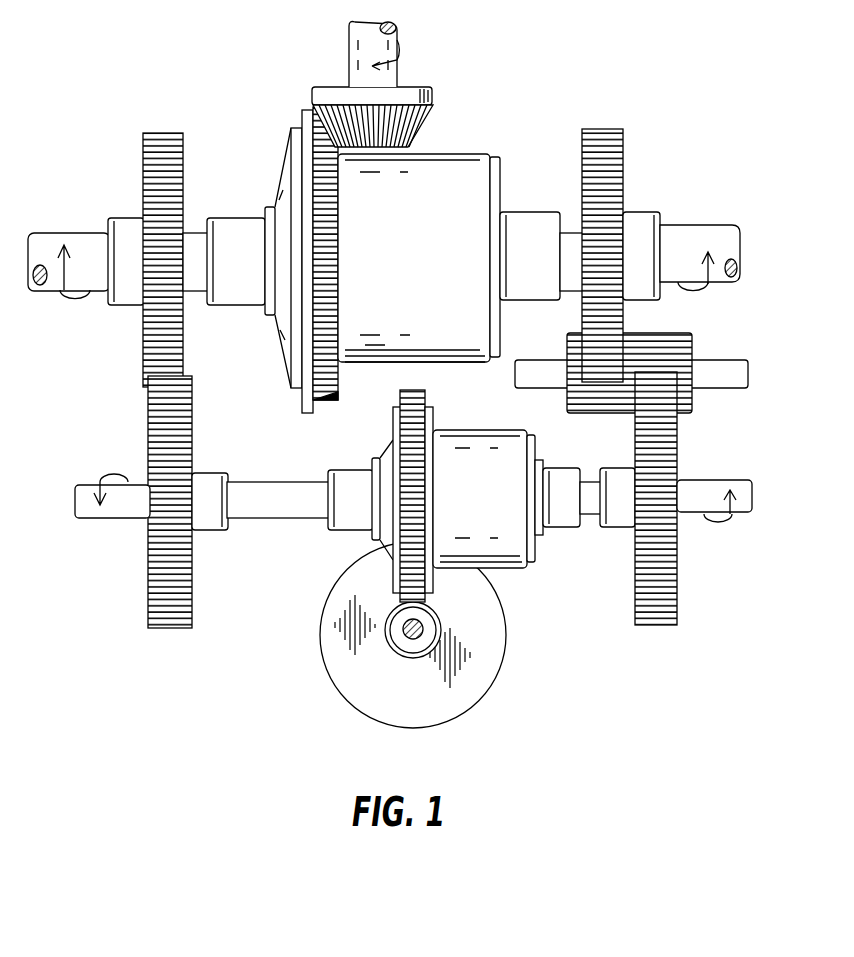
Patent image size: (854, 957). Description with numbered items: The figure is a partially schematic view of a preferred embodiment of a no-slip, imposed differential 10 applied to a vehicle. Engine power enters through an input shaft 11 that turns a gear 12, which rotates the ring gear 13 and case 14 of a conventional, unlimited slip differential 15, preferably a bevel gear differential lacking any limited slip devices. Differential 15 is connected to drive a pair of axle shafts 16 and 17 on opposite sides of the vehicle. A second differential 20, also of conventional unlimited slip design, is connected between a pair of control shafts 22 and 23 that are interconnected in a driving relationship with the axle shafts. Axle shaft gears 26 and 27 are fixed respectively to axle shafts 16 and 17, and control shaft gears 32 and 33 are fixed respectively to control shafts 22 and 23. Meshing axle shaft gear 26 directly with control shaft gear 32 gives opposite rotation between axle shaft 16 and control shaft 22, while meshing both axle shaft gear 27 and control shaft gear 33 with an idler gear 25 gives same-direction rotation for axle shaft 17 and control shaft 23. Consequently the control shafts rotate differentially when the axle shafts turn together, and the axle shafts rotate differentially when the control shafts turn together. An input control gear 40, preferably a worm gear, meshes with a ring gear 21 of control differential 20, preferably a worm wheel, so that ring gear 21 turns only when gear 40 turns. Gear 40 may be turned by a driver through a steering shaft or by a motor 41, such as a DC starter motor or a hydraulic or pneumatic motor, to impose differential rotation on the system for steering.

The speed change gear assembly 10 is at (532, 52).
The shaft 11 is at (352, 42).
The gear 12 is at (416, 114).
The ring gear 13 is at (328, 388).
The case 14 is at (475, 150).
The unlimited slip differential 15 is at (482, 342).
The axle shaft 16 is at (68, 232).
The axle shaft 17 is at (686, 228).
The second differential 20 is at (466, 434).
The ring gear 21 is at (420, 396).
The control shaft 22 is at (130, 520).
The control shaft 23 is at (696, 484).
The idler gear 25 is at (680, 345).
The axle shaft gear 26 is at (152, 135).
The axle shaft gear 27 is at (605, 130).
The control shaft gear 32 is at (197, 592).
The control shaft gear 33 is at (680, 592).
The input control gear 40 is at (392, 650).
The motor 41 is at (505, 652).